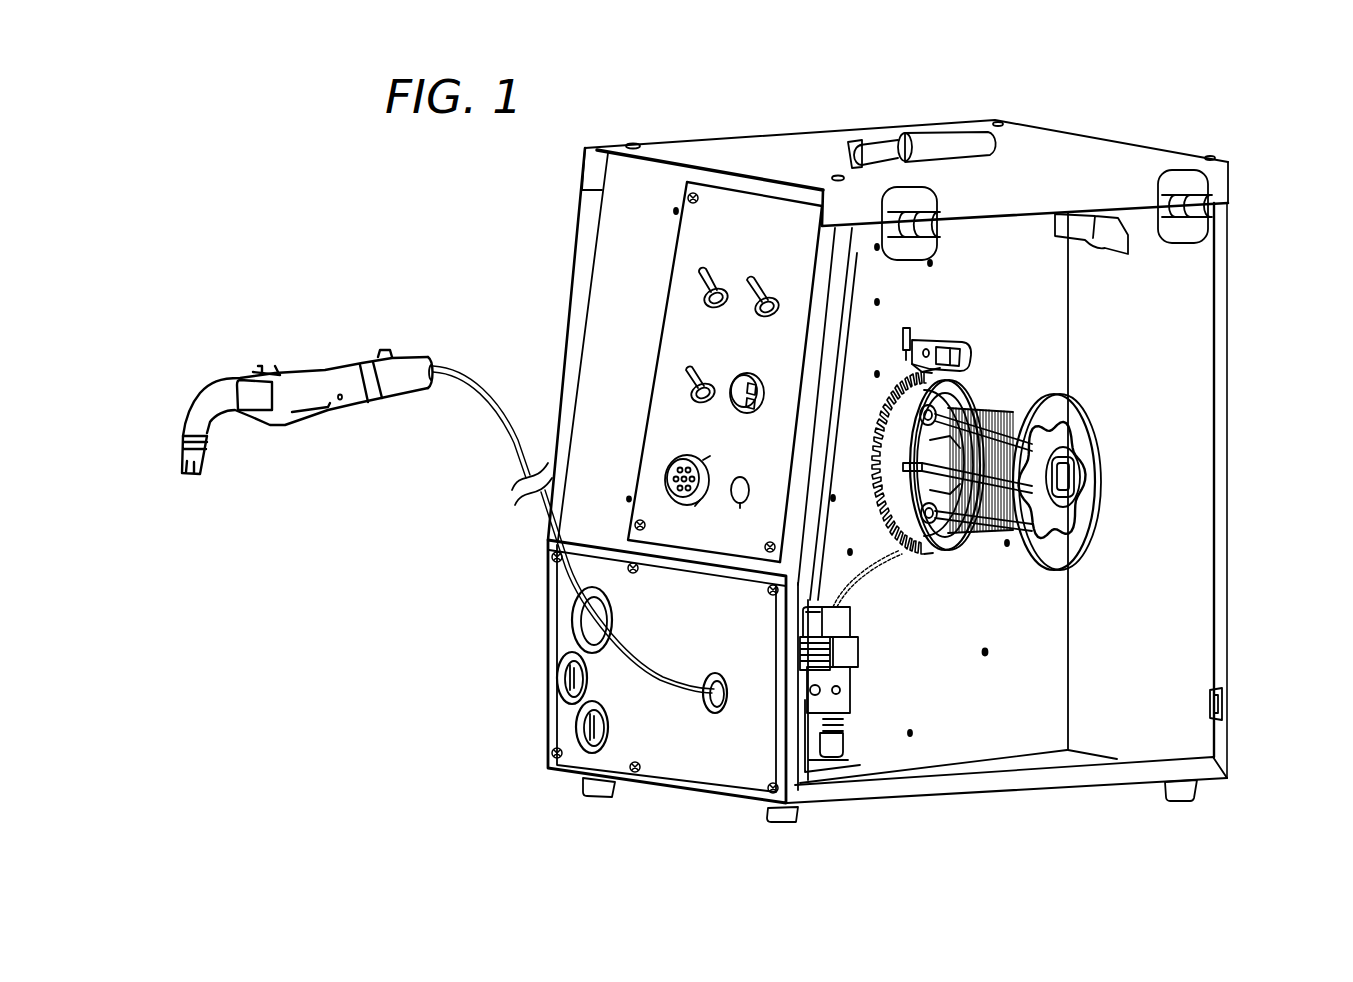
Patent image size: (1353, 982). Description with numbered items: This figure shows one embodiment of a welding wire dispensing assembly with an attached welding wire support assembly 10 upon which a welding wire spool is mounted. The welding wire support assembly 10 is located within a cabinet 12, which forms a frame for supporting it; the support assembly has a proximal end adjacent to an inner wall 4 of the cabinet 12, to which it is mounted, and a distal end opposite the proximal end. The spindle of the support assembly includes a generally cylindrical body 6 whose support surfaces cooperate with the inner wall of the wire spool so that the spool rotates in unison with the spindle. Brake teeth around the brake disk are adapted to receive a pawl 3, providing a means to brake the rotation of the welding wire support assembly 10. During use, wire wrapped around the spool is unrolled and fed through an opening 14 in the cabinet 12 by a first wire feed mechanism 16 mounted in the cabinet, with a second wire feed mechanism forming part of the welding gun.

The pawl 3 is at (920, 347).
The inner wall 4 is at (992, 287).
The cylindrical body 6 is at (975, 525).
The welding wire support assembly 10 is at (943, 560).
The cabinet 12 is at (1103, 137).
The opening 14 is at (717, 700).
The first wire feed mechanism 16 is at (845, 697).